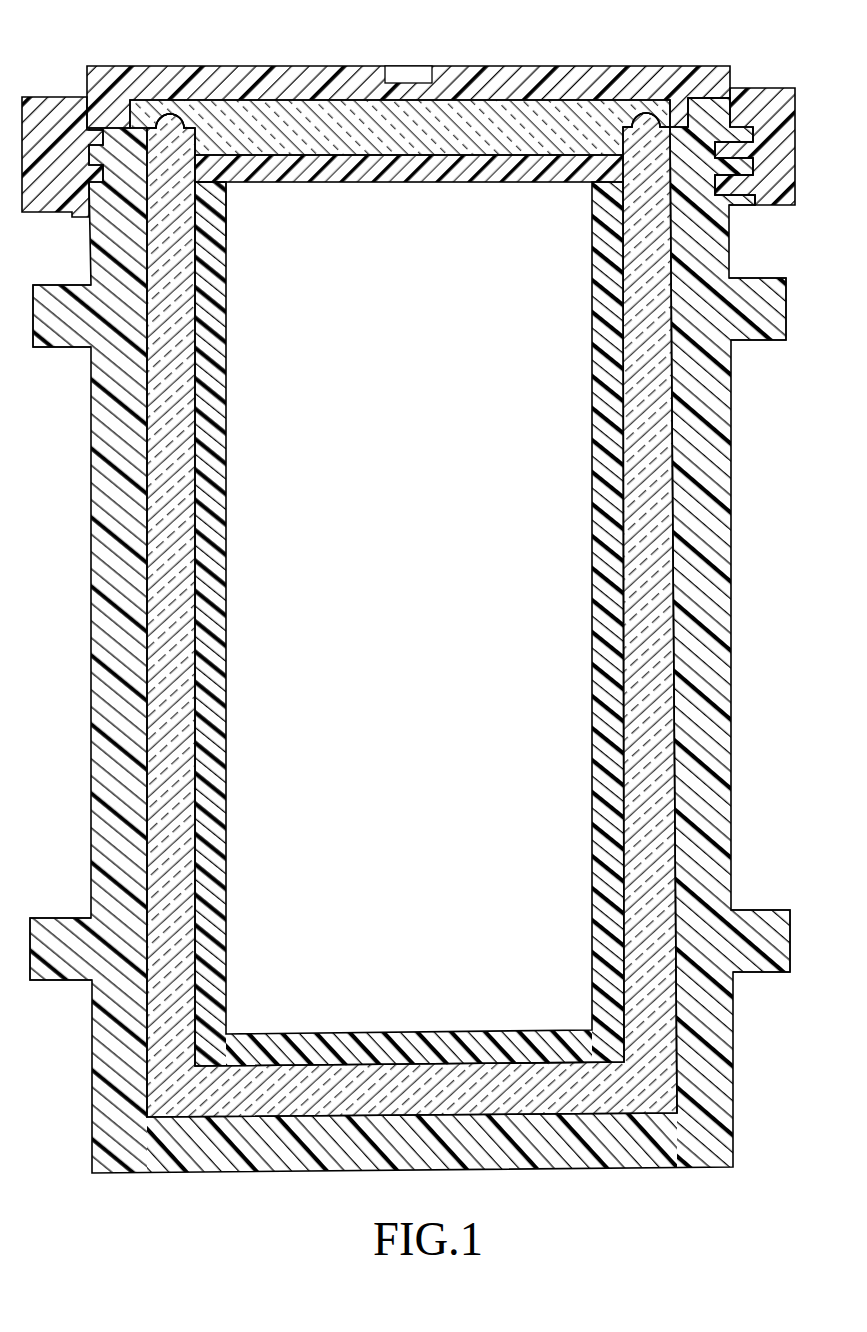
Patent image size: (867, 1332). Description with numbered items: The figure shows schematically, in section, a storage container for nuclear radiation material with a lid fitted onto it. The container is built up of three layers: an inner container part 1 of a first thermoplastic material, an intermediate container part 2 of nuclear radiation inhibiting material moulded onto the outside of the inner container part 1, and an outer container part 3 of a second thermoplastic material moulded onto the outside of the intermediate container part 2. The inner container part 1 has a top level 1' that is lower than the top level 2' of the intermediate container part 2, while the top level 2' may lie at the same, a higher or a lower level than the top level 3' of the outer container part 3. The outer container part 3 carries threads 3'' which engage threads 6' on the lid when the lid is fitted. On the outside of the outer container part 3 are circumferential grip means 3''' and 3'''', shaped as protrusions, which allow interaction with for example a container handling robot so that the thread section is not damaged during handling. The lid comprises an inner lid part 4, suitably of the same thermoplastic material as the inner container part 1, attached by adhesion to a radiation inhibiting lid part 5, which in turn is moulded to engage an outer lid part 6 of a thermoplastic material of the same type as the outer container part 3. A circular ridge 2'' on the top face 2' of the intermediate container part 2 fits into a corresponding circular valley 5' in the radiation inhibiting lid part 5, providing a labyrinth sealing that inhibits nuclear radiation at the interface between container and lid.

The inner container part 1 is at (409, 624).
The top level of the inner container part 1' is at (240, 221).
The intermediate container part 2 is at (412, 615).
The top level of the intermediate container part 2' is at (128, 194).
The circular ridge 2'' is at (646, 74).
The outer container part 3 is at (410, 635).
The top level of the outer container part 3' is at (722, 68).
The threads 3'' is at (776, 194).
The circumferential grip means 3''' is at (401, 339).
The circumferential grip means 3'''' is at (411, 918).
The inner lid part 4 is at (408, 172).
The radiation inhibiting lid part 5 is at (400, 88).
The circular valley 5' is at (178, 78).
The outer lid part 6 is at (441, 108).
The threads 6' is at (62, 153).